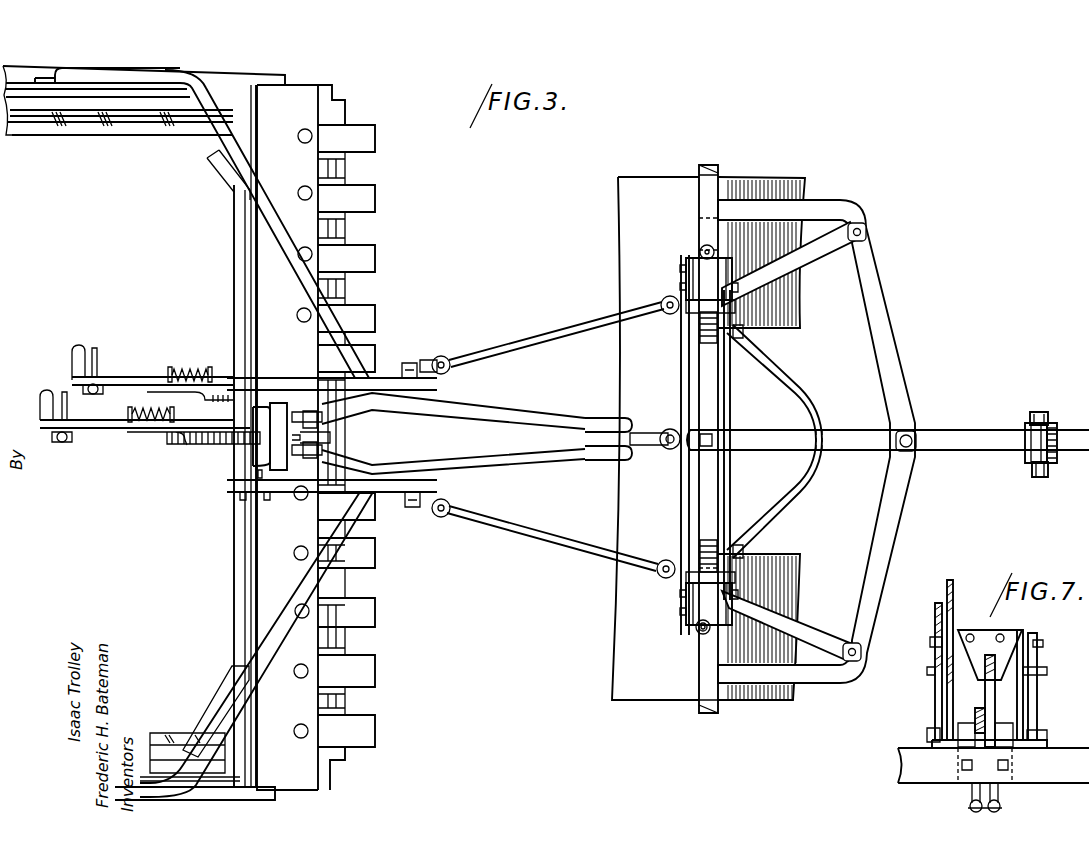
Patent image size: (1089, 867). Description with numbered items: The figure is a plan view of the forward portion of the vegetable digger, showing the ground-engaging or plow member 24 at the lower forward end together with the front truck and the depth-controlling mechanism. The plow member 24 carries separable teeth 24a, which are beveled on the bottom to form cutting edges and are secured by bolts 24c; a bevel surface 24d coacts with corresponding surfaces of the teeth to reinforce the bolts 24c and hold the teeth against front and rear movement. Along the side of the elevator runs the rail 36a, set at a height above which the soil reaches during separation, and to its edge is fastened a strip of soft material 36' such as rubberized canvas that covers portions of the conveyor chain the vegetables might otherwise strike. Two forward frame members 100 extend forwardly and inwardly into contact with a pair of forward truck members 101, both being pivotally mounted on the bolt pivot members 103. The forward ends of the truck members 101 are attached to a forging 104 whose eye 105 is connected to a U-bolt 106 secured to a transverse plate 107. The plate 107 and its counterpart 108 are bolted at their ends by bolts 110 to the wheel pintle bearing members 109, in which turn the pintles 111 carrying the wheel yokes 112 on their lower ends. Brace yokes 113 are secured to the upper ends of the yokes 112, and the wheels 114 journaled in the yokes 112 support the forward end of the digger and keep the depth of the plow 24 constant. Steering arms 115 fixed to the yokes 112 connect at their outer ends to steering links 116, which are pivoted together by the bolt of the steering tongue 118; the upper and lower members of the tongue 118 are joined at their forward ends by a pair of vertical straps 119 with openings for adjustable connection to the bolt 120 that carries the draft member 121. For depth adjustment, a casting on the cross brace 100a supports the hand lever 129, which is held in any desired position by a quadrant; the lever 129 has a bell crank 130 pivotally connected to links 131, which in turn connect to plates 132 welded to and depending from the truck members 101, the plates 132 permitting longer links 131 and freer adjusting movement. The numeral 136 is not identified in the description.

The rail 36a is at (58, 100).
The protecting strip of soft material 36' is at (107, 119).
The forward frame members 100 is at (213, 127).
The cross brace 100a is at (238, 525).
The ground engaging or plow member 24 is at (308, 228).
The separable teeth 24a is at (370, 308).
The bolts 24c is at (300, 188).
The bevel surface 24d is at (320, 768).
The upper latch bar 136 is at (148, 380).
The hand lever 129 is at (96, 427).
The bell crank 130 is at (320, 437).
The links 131 is at (343, 423).
The plates 132 is at (308, 470).
The forward truck members 101 is at (540, 458).
The bolt pivot members 103 is at (413, 500).
The forging 104 is at (642, 430).
The eye 105 is at (650, 448).
The U-bolt 106 is at (665, 455).
The transverse plate 107 is at (688, 372).
The counterpart plate 108 is at (727, 362).
The wheel pintle bearing members 109 is at (698, 247).
The bolts 110 is at (682, 263).
The pintles 111 is at (700, 633).
The wheel yokes 112 is at (707, 323).
The brace yokes 113 is at (712, 168).
The wheels 114 is at (635, 221).
The steering arms 115 is at (822, 262).
The steering links 116 is at (882, 360).
The steering tongue 118 is at (853, 438).
The vertical straps 119 is at (1023, 425).
The bolt 120 is at (1058, 400).
The draft member 121 is at (1060, 432).